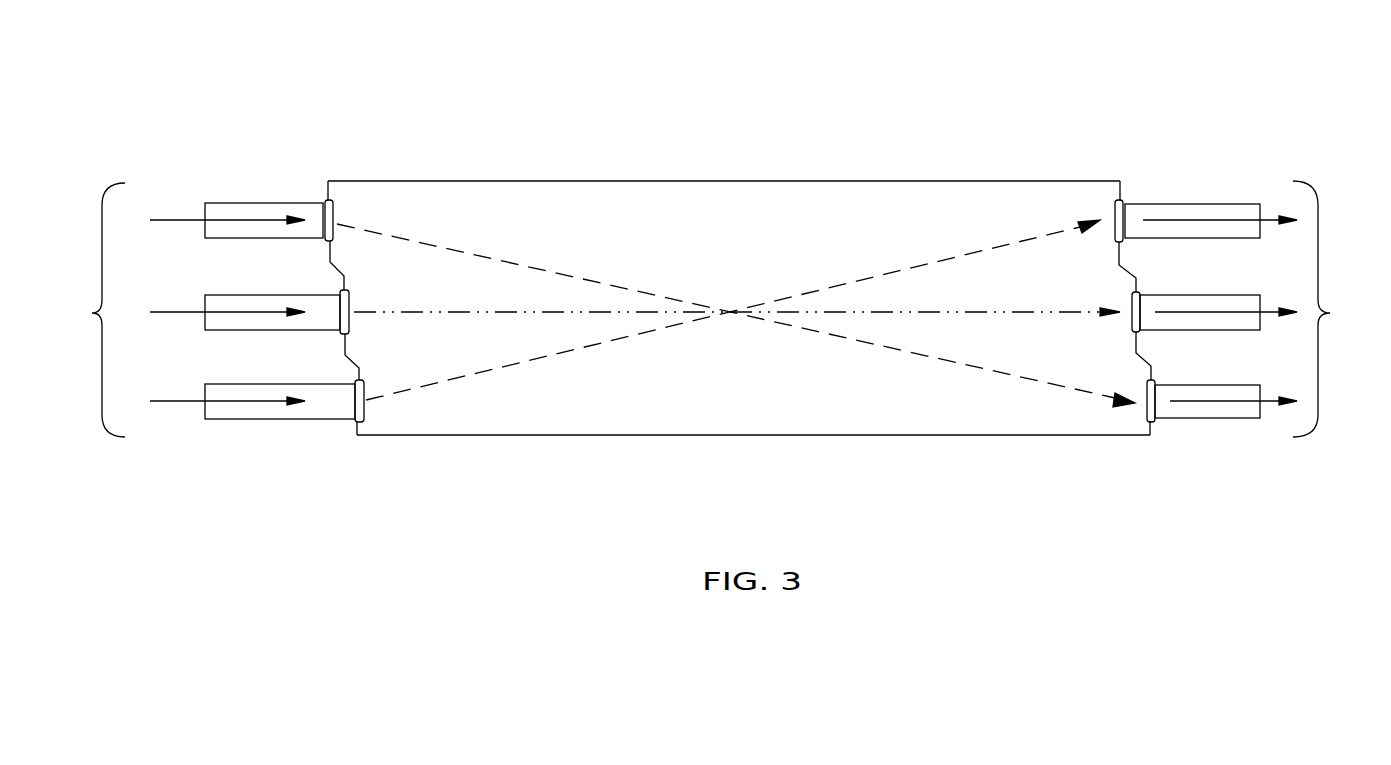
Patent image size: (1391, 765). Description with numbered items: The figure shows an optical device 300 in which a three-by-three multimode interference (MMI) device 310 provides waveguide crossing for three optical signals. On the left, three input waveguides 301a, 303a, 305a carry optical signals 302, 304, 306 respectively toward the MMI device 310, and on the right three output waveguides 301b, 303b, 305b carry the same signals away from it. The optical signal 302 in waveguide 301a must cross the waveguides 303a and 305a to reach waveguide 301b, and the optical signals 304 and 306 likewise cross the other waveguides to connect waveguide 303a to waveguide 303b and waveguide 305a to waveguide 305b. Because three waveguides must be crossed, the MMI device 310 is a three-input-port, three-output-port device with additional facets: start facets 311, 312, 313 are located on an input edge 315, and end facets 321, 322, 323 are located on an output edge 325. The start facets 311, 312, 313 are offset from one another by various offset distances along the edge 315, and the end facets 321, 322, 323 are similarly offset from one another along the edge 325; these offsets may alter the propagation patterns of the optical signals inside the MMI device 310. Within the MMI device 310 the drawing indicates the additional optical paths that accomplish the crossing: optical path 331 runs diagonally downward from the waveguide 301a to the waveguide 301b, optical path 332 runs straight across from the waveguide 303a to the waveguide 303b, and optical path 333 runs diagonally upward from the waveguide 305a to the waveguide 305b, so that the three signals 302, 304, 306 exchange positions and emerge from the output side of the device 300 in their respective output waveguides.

The optical device 300 is at (1331, 51).
The waveguide 301a is at (265, 203).
The waveguide 301b is at (1185, 418).
The optical signal 302 is at (183, 220).
The waveguide 303a is at (272, 295).
The waveguide 303b is at (1198, 330).
The optical signal 304 is at (183, 312).
The waveguide 305a is at (272, 383).
The waveguide 305b is at (1190, 204).
The optical signal 306 is at (180, 400).
The MMI device 310 is at (1013, 181).
The start facet 311 is at (333, 212).
The start facet 312 is at (348, 297).
The start facet 313 is at (362, 385).
The edge 315 is at (84, 310).
The end facet 321 is at (1148, 418).
The end facet 322 is at (1133, 320).
The end facet 323 is at (1117, 240).
The edge 325 is at (1335, 309).
The optical path 331 is at (522, 267).
The optical path 332 is at (995, 310).
The optical path 333 is at (510, 367).